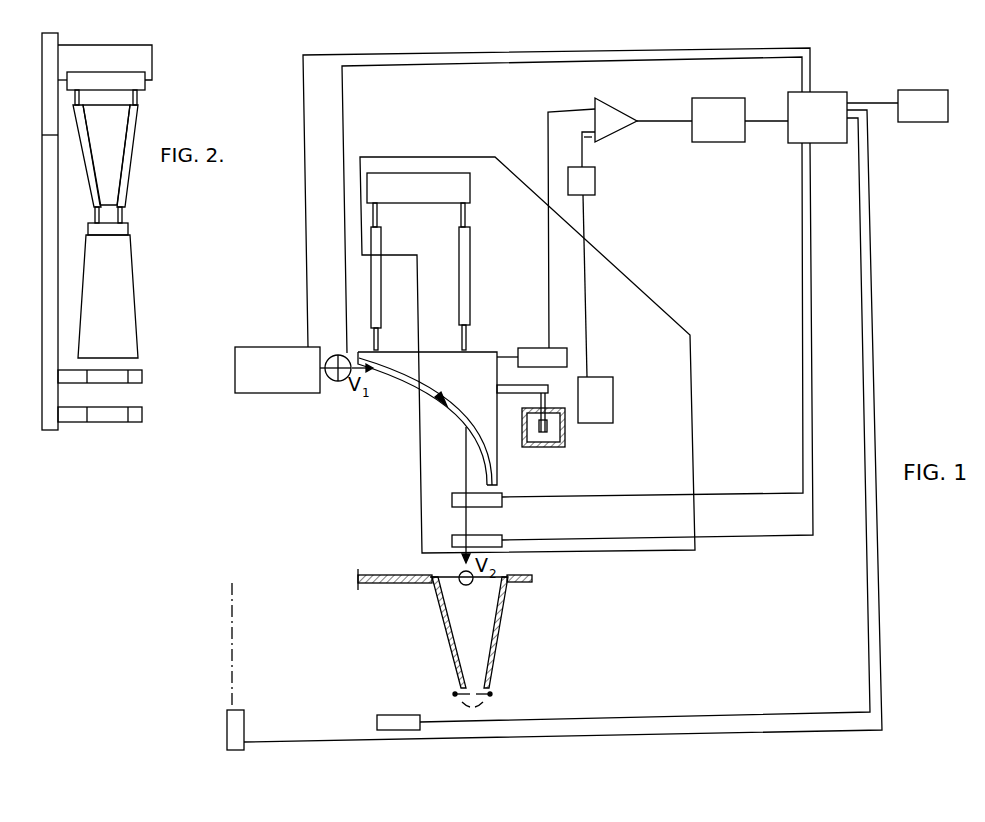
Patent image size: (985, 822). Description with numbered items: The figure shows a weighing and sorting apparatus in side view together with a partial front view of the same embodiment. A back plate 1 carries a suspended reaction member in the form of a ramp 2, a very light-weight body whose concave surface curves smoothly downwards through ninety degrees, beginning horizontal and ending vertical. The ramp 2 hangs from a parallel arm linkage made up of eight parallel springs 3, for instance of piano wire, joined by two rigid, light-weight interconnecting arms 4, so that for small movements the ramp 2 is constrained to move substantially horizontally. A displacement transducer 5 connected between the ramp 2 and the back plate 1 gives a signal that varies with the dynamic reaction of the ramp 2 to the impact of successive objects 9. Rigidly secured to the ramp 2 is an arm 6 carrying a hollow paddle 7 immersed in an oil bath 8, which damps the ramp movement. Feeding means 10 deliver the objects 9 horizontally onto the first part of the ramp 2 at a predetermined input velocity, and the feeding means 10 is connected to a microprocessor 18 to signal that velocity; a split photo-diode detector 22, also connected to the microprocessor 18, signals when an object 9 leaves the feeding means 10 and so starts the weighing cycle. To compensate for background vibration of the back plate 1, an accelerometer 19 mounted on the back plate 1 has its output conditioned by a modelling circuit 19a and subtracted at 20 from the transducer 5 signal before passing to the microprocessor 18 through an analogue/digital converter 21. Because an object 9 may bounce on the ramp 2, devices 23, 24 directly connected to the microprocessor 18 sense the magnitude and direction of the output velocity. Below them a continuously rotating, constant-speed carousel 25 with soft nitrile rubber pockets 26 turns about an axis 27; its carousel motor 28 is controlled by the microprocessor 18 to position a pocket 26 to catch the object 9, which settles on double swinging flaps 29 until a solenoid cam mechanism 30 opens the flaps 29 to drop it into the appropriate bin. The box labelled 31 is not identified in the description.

In FIG. 2, the back plate 1 is at (50, 190).
In FIG. 1, the back plate 1 is at (645, 292).
In FIG. 2, the ramp 2 is at (118, 293).
In FIG. 1, the ramp 2 is at (477, 386).
In FIG. 2, the parallel springs 3 is at (73, 94).
In FIG. 1, the parallel springs 3 is at (377, 212).
In FIG. 2, the interconnecting arms 4 is at (115, 147).
In FIG. 1, the interconnecting arms 4 is at (378, 248).
In FIG. 1, the displacement transducer 5 is at (540, 352).
In FIG. 1, the arm 6 is at (535, 386).
In FIG. 1, the hollow paddle 7 is at (545, 437).
In FIG. 1, the oil bath 8 is at (565, 437).
In FIG. 1, the objects 9 is at (465, 586).
In FIG. 1, the feeding means 10 is at (283, 385).
In FIG. 1, the microprocessor 18 is at (826, 103).
In FIG. 1, the accelerometer 19 is at (608, 398).
In FIG. 1, the modelling circuit 19a is at (588, 184).
In FIG. 1, the subtraction point 20 is at (607, 118).
In FIG. 1, the analogue/digital converter 21 is at (712, 125).
In FIG. 1, the split photo-diode detector 22 is at (345, 381).
In FIG. 2, the velocity sensing device 23 is at (140, 375).
In FIG. 1, the velocity sensing device 23 is at (500, 502).
In FIG. 2, the velocity sensing device 24 is at (135, 420).
In FIG. 1, the velocity sensing device 24 is at (452, 540).
In FIG. 1, the carousel 25 is at (398, 588).
In FIG. 1, the pockets 26 is at (497, 625).
In FIG. 1, the axis 27 is at (231, 672).
In FIG. 1, the carousel motor 28 is at (228, 725).
In FIG. 1, the double swinging flaps 29 is at (455, 696).
In FIG. 1, the solenoid cam mechanism 30 is at (378, 718).
In FIG. 1, the display 31 is at (915, 98).